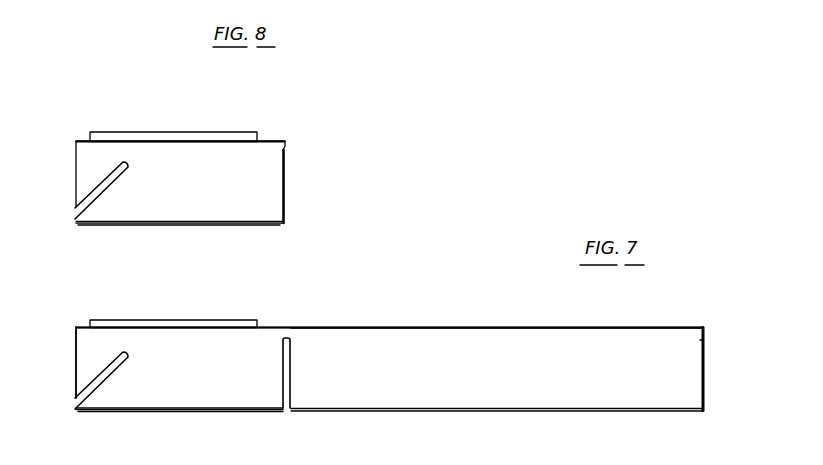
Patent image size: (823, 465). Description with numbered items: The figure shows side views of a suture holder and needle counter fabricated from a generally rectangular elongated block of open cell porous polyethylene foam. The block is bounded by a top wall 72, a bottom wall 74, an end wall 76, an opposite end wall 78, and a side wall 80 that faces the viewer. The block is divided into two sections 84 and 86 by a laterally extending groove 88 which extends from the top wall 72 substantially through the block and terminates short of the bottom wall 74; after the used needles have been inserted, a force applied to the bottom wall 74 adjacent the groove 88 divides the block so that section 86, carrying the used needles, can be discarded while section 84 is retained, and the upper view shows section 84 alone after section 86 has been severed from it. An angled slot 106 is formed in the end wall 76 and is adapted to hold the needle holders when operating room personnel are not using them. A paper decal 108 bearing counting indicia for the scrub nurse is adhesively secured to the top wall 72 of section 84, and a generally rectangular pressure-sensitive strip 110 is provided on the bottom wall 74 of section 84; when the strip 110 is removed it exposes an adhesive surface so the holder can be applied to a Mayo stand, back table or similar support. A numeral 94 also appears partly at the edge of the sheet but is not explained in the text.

In FIG. 8, the top wall 72 is at (257, 226).
In FIG. 7, the top wall 72 is at (523, 412).
In FIG. 8, the bottom wall 74 is at (275, 141).
In FIG. 7, the bottom wall 74 is at (345, 327).
In FIG. 7, the end wall 76 is at (83, 347).
In FIG. 7, the end wall 78 is at (705, 375).
In FIG. 7, the side wall 80 is at (690, 347).
In FIG. 8, the section 84 is at (72, 157).
In FIG. 7, the section 84 is at (268, 322).
In FIG. 7, the section 86 is at (480, 327).
In FIG. 7, the groove 88 is at (287, 412).
In FIG. 7, the support 94 is at (213, 463).
In FIG. 8, the angled slot 106 is at (98, 195).
In FIG. 7, the angled slot 106 is at (94, 388).
In FIG. 8, the paper decal 108 is at (180, 227).
In FIG. 7, the paper decal 108 is at (193, 413).
In FIG. 8, the pressure-sensitive strip 110 is at (189, 132).
In FIG. 7, the pressure-sensitive strip 110 is at (192, 320).